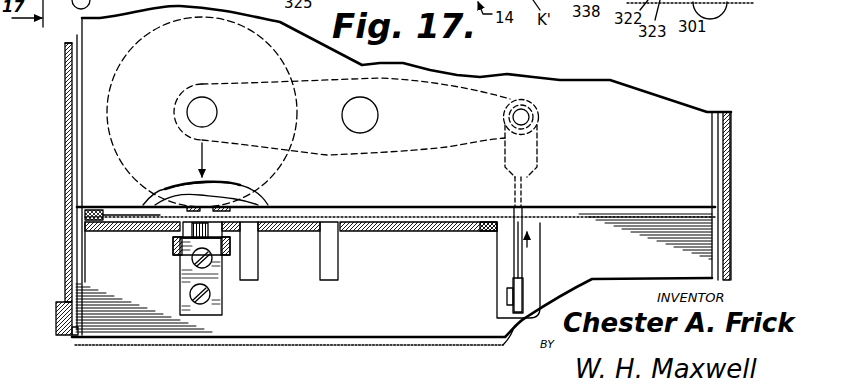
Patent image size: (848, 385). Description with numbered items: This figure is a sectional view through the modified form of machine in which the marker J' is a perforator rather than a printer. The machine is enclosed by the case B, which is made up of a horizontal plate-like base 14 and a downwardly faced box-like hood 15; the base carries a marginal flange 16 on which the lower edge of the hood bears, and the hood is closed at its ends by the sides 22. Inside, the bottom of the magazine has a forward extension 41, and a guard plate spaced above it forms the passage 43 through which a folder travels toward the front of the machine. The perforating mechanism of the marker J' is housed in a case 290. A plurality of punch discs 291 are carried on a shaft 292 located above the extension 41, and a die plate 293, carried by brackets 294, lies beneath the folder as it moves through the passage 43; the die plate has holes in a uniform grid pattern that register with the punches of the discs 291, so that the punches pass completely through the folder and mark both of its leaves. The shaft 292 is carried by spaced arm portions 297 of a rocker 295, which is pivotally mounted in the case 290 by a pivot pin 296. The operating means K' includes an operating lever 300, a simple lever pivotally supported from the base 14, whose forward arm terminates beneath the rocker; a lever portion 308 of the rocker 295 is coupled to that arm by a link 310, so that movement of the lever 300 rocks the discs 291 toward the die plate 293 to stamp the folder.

The base 14 is at (256, 353).
The hood 15 is at (730, 222).
The marginal flange 16 is at (57, 318).
The sides 22 is at (63, 143).
The forward extension 41 is at (116, 223).
The passage 43 is at (387, 229).
The case 290 is at (406, 74).
The punch discs 291 is at (113, 140).
The shaft 292 is at (218, 112).
The die plate 293 is at (185, 229).
The brackets 294 is at (185, 278).
The rocker 295 is at (323, 157).
The pivot pin 296 is at (374, 117).
The arm portions 297 is at (242, 82).
The operating lever 300 is at (534, 288).
The lever portion 308 is at (452, 147).
The link 310 is at (524, 191).
The case B is at (64, 66).
The marker J' is at (594, 77).
The operating means K' is at (549, 258).